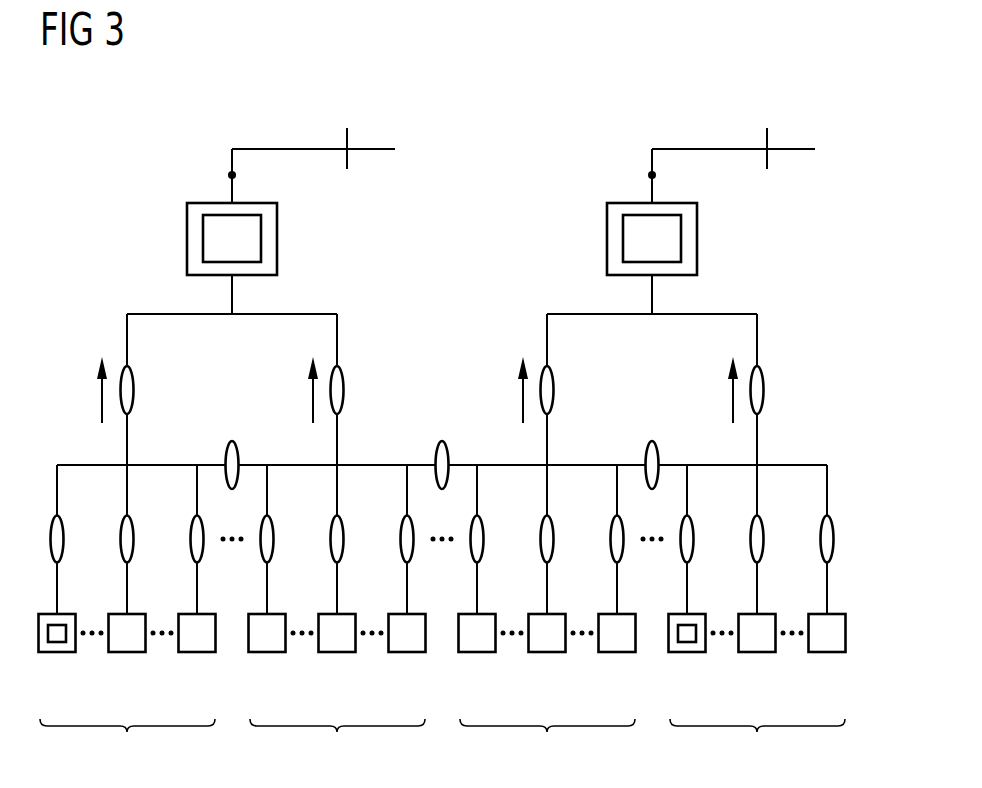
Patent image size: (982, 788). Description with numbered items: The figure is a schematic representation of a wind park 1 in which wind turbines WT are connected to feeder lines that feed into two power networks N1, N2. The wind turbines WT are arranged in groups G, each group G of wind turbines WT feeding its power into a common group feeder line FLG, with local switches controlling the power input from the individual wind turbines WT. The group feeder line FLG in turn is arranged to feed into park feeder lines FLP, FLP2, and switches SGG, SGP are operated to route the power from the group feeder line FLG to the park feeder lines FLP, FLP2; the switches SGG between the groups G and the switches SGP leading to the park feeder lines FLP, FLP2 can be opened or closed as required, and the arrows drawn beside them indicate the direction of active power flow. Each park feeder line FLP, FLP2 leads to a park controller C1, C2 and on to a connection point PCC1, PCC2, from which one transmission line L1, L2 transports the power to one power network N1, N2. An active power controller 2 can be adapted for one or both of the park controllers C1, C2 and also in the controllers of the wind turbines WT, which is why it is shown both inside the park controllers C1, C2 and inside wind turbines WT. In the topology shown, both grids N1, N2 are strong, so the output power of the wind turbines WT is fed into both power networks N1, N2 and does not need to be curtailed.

The wind park 1 is at (576, 73).
The active power controller 2 is at (203, 232).
The transmission line L1 is at (282, 149).
The power network N1 is at (369, 149).
The connection point PCC1 is at (232, 175).
The park controller C1 is at (278, 238).
The transmission line L2 is at (702, 149).
The power network N2 is at (789, 149).
The connection point PCC2 is at (652, 175).
The park controller C2 is at (698, 238).
The park feeder line FLP is at (168, 314).
The park feeder line FLP2 is at (588, 314).
The switch SGP is at (133, 390).
The switch SGG is at (677, 413).
The group feeder line FLG is at (68, 463).
The wind turbine WT is at (837, 683).
The group G is at (442, 742).